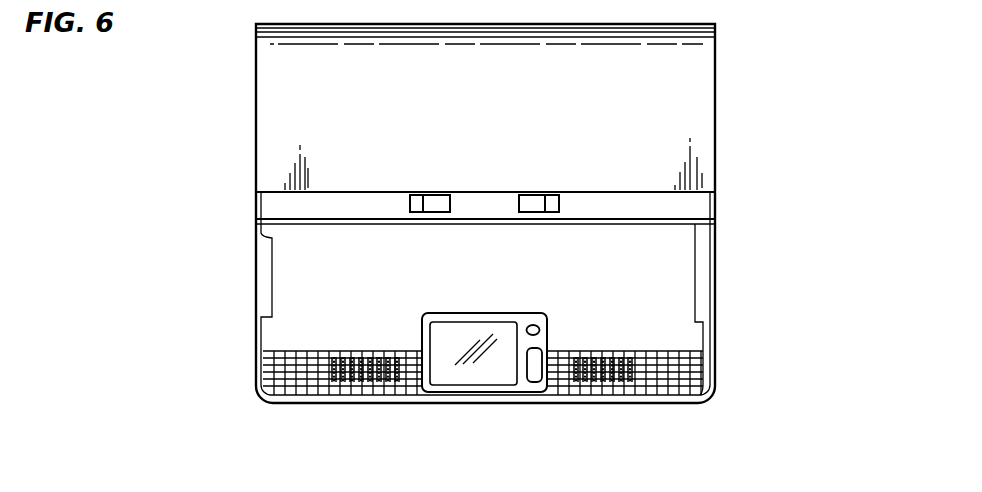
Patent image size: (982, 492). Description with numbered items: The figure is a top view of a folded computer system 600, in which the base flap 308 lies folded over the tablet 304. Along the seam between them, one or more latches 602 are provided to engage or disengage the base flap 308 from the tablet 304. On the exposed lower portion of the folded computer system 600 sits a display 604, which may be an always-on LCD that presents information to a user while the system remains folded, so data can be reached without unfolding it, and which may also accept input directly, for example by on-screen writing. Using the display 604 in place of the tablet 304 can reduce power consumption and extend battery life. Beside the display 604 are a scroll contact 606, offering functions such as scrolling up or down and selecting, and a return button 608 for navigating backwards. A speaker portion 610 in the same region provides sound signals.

The folded computer system 600 is at (762, 56).
The base flap 308 is at (276, 65).
The tablet 304 is at (323, 301).
The latches 602 is at (540, 206).
The display 604 is at (467, 375).
The scroll contact 606 is at (533, 380).
The return button 608 is at (540, 330).
The speaker portion 610 is at (342, 373).